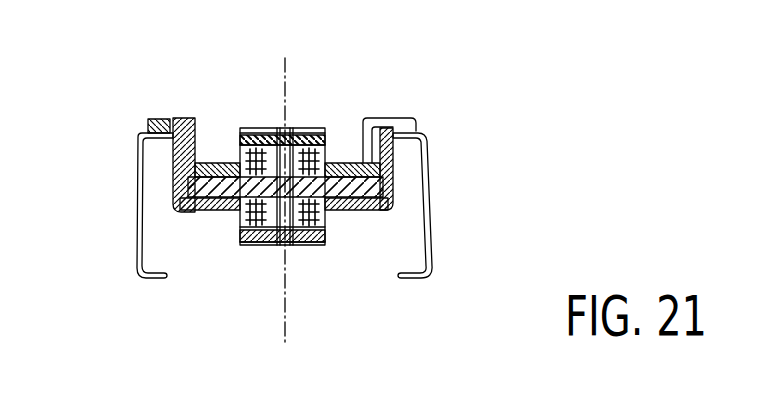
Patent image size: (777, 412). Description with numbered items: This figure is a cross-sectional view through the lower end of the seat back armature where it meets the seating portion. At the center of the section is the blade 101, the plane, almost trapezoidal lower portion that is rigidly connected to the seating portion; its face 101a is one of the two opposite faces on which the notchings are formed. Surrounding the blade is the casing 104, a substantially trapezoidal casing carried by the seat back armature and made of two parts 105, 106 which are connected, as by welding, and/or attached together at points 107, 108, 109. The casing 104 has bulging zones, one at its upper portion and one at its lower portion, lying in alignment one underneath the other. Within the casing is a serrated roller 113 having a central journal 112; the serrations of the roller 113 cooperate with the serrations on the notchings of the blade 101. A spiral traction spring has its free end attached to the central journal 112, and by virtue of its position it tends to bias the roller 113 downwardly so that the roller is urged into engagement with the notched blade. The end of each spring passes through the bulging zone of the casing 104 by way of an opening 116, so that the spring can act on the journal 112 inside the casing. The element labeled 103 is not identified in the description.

The blade 101 is at (207, 221).
The face of the blade 101a is at (341, 160).
The terminal arm 103 is at (429, 182).
The casing 104 is at (357, 217).
The casing part 105 is at (195, 130).
The casing part 106 is at (187, 214).
The attachment point 107 is at (103, 92).
The attachment point 108 is at (103, 92).
The attachment point 109 is at (173, 118).
The central journal 112 is at (294, 128).
The serrated roller 113 is at (259, 128).
The opening 116 is at (227, 220).